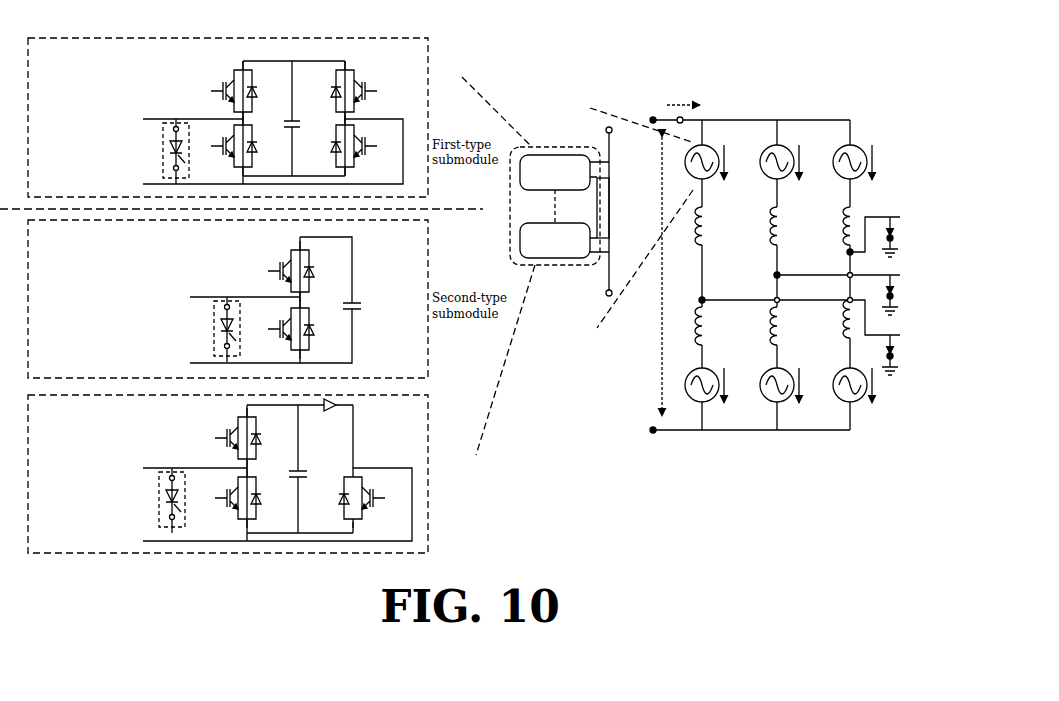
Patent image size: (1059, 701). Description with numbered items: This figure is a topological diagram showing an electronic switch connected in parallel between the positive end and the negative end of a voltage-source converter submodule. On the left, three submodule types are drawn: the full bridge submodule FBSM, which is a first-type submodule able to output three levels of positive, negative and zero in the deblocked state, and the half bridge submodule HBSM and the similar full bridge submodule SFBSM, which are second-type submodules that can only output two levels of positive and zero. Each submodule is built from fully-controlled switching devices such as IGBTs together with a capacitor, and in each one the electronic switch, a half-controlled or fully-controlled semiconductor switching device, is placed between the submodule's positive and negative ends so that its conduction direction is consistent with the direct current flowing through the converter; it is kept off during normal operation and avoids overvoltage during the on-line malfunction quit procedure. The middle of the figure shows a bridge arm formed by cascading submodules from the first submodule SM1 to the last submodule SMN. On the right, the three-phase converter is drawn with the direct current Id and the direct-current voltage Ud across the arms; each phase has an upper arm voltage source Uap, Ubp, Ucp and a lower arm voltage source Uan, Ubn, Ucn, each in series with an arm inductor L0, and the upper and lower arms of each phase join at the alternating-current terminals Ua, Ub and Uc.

The full bridge submodule FBSM is at (228, 117).
The half bridge submodule HBSM is at (228, 299).
The similar full bridge submodule SFBSM is at (228, 474).
The first submodule SM1 is at (555, 172).
The N-th submodule SMN is at (555, 240).
The DC current Id is at (683, 97).
The DC voltage Ud is at (671, 276).
The upper arm voltage source phase c Ucp is at (708, 156).
The upper arm voltage source phase b Ubp is at (784, 156).
The upper arm voltage source phase a Uap is at (858, 156).
The lower arm voltage source phase c Ucn is at (711, 383).
The lower arm voltage source phase b Ubn is at (787, 383).
The lower arm voltage source phase a Uan is at (860, 381).
The arm inductor L0 is at (763, 276).
The AC terminal phase a Ua is at (899, 237).
The AC terminal phase b Ub is at (900, 295).
The AC terminal phase c Uc is at (899, 355).